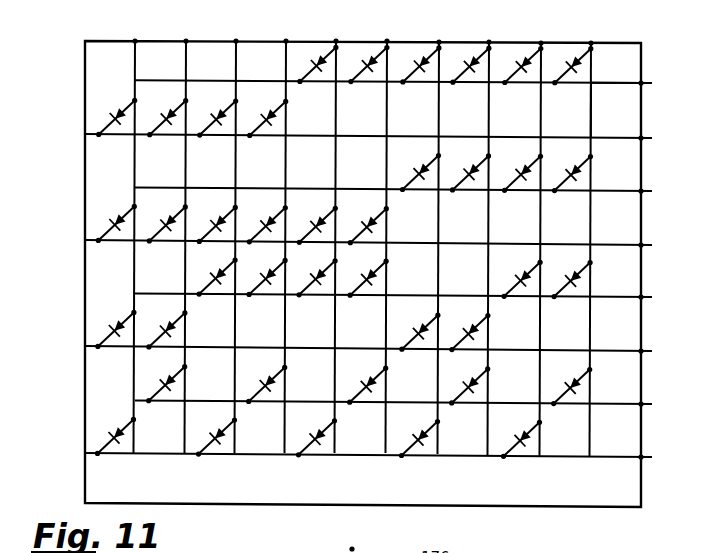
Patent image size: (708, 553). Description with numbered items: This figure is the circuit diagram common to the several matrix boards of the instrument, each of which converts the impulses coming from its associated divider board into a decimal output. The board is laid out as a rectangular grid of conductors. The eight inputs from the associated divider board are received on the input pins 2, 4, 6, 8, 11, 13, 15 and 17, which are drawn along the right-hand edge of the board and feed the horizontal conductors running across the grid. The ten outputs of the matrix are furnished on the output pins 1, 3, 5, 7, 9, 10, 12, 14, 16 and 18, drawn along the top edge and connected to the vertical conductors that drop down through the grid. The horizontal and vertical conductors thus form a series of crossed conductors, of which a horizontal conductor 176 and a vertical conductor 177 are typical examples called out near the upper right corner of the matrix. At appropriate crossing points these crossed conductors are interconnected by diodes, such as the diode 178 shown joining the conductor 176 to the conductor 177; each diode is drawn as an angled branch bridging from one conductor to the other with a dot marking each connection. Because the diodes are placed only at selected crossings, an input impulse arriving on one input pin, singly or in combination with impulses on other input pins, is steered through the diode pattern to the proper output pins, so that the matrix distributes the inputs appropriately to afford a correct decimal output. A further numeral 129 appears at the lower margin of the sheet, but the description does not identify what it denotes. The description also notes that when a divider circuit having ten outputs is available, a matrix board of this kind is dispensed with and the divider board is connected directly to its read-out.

The output pin 1 is at (137, 41).
The output pin 3 is at (188, 41).
The output pin 5 is at (238, 41).
The output pin 7 is at (288, 41).
The output pin 9 is at (338, 41).
The output pin 10 is at (389, 41).
The output pin 12 is at (441, 41).
The output pin 14 is at (491, 41).
The output pin 16 is at (543, 41).
The output pin 18 is at (593, 41).
The input pin 2 is at (401, 83).
The input pin 4 is at (376, 138).
The input pin 6 is at (401, 191).
The input pin 8 is at (376, 245).
The input pin 11 is at (406, 297).
The input pin 13 is at (381, 351).
The input pin 15 is at (406, 404).
The input pin 17 is at (381, 457).
The crossed conductor 176 is at (599, 82).
The crossed conductor 177 is at (625, 116).
The diode 178 is at (563, 67).
The conductor 129 is at (359, 541).